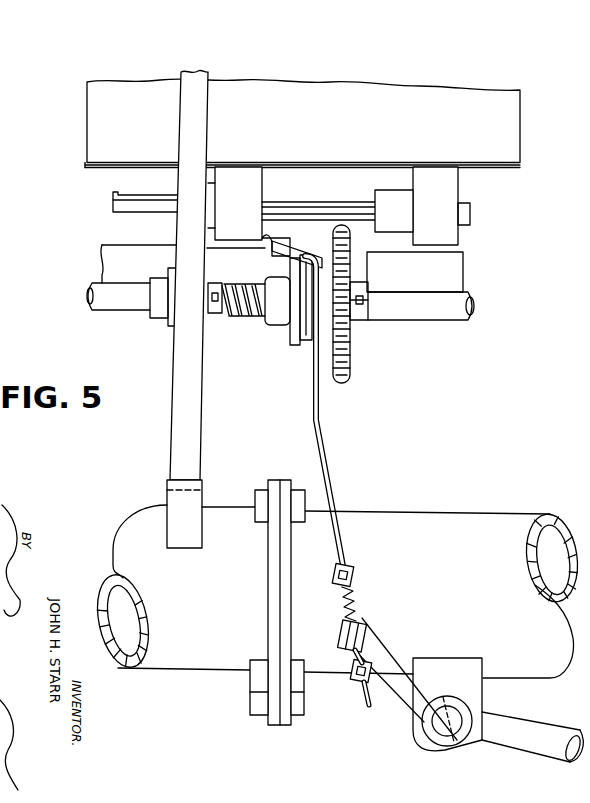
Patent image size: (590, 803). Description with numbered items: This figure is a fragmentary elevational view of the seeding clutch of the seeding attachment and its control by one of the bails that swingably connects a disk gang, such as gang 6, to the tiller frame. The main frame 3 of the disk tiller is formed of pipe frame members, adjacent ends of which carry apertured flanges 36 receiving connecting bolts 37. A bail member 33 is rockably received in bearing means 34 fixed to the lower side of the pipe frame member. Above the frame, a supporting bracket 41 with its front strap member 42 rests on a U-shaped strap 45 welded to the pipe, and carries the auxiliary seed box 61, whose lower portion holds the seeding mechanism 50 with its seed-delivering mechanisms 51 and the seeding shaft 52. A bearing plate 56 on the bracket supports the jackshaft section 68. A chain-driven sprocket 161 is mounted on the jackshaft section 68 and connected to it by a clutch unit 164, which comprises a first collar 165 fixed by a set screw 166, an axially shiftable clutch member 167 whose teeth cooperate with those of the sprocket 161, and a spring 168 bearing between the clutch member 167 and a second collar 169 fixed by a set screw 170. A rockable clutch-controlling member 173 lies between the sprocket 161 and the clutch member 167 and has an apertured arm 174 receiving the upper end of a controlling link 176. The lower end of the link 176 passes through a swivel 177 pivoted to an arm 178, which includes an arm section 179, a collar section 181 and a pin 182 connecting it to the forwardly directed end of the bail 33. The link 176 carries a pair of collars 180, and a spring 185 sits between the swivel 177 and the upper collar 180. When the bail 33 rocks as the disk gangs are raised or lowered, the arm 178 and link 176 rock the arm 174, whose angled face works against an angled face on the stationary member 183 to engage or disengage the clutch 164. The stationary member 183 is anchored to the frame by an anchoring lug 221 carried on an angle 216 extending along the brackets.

The main frame 3 is at (478, 510).
The gang of tiller disks 6 is at (531, 112).
The bail member 33 is at (529, 754).
The bearing means 34 is at (476, 670).
The flange 36 is at (285, 576).
The connecting bolt 37 is at (258, 502).
The supporting bracket 41 is at (170, 410).
The front strap member 42 is at (192, 440).
The strap 45 is at (166, 494).
The seeding mechanism 50 is at (254, 184).
The seed-delivering mechanism 51 is at (437, 185).
The seeding shaft 52 is at (113, 200).
The bearing plate 56 is at (172, 336).
The auxiliary seed box 61 is at (398, 86).
The auxiliary jackshaft section 68 is at (451, 320).
The sprocket 161 is at (351, 267).
The clutch unit 164 is at (270, 332).
The first collar 165 is at (362, 321).
The set screw 166 is at (369, 301).
The clutch member 167 is at (295, 342).
The spring 168 is at (245, 316).
The second collar 169 is at (213, 318).
The set screw 170 is at (215, 290).
The clutch-controlling member 173 is at (308, 332).
The arm 174 is at (306, 262).
The controlling link 176 is at (322, 455).
The swivel 177 is at (342, 626).
The arm 178 is at (385, 636).
The arm section 179 is at (393, 660).
The collar 180 is at (354, 574).
The collar section 181 is at (465, 710).
The pin 182 is at (440, 722).
The stationary member 183 is at (317, 262).
The spring 185 is at (357, 601).
The angle 216 is at (463, 268).
The anchoring lug 221 is at (266, 238).